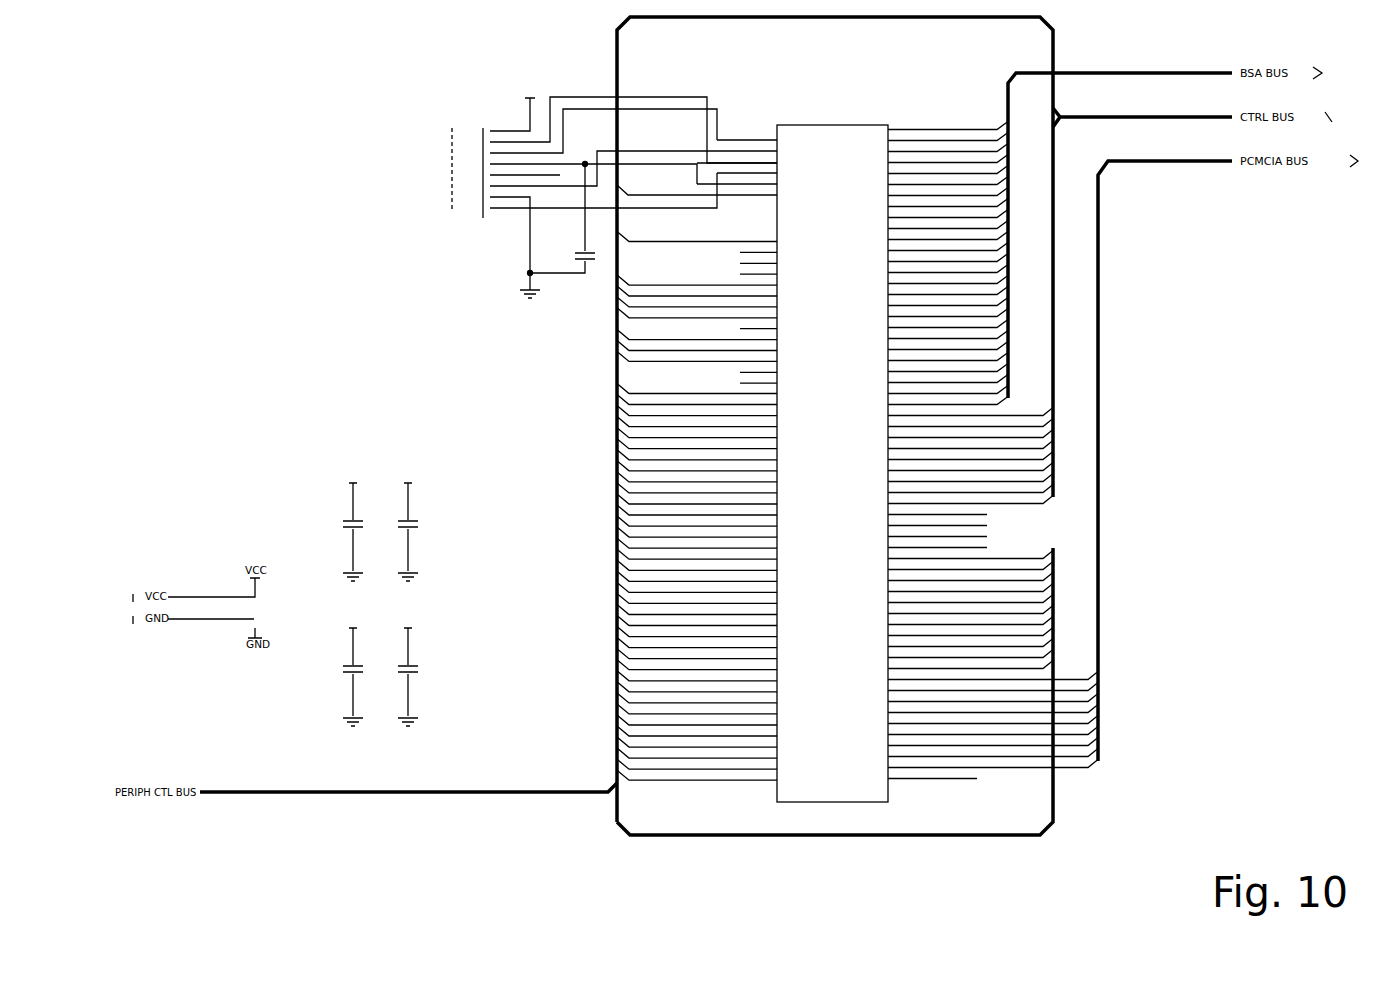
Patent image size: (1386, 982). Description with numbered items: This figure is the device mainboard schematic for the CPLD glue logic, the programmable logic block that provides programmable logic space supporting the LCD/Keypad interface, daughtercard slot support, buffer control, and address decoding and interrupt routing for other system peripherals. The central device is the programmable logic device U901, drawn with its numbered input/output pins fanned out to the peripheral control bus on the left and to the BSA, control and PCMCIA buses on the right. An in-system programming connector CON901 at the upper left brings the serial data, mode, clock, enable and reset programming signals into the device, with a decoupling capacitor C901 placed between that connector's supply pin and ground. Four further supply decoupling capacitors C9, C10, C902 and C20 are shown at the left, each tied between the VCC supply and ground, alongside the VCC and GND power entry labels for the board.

The ISPLSI2096C-70LT(128) programmable logic device U901 is at (857, 471).
The ISP connector CON901 is at (598, 190).
The 0.1uF capacitor C901 is at (566, 222).
The 1uF capacitor C9 is at (364, 525).
The 1uF capacitor C10 is at (419, 525).
The 1uF capacitor C902 is at (367, 670).
The 1uF capacitor C20 is at (419, 670).